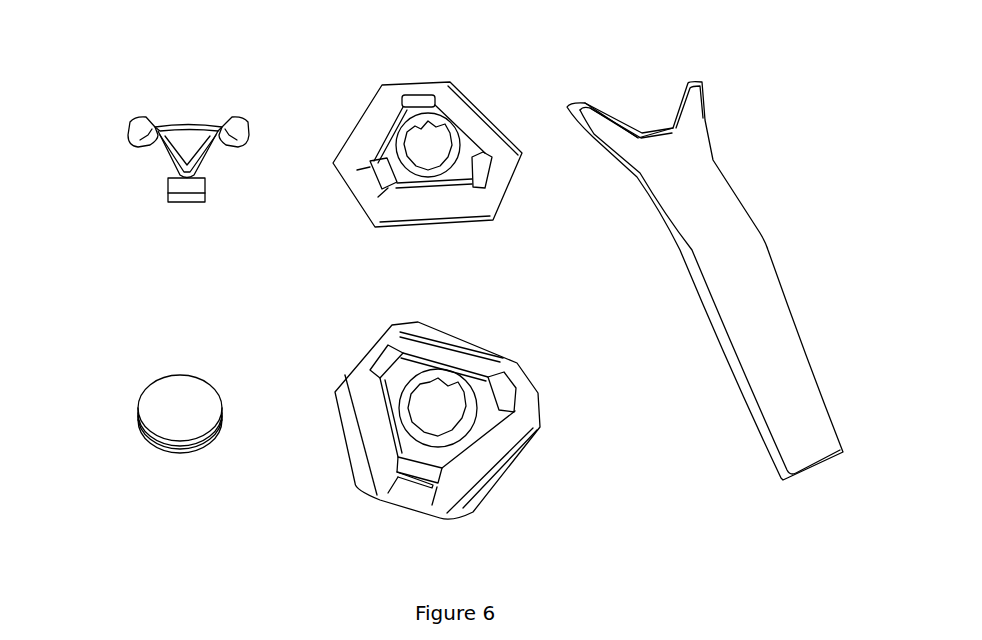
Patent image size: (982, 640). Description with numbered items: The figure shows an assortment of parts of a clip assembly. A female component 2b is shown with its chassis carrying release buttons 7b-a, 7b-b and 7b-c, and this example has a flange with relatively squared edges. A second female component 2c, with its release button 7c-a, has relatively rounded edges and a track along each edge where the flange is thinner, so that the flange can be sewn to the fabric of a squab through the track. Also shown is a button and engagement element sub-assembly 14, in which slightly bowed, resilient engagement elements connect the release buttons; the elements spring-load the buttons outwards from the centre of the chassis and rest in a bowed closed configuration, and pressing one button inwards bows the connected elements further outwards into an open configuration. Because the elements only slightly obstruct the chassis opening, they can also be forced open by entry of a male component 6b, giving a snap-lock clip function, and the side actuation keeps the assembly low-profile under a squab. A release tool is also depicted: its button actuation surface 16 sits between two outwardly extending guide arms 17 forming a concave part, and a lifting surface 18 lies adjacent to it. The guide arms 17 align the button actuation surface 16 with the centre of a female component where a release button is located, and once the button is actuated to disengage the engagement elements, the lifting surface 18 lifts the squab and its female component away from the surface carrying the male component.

The button and engagement element sub-assembly 14 is at (135, 120).
The female component 2b is at (397, 85).
The release button 7b-a is at (387, 173).
The release button 7b-b is at (428, 98).
The release button 7b-c is at (480, 168).
The female component 2c is at (483, 332).
The release button 7c-a is at (385, 360).
The male component 6b is at (178, 408).
The button actuation surface 16 is at (667, 125).
The guide arms 17 is at (693, 90).
The lifting surface 18 is at (692, 157).